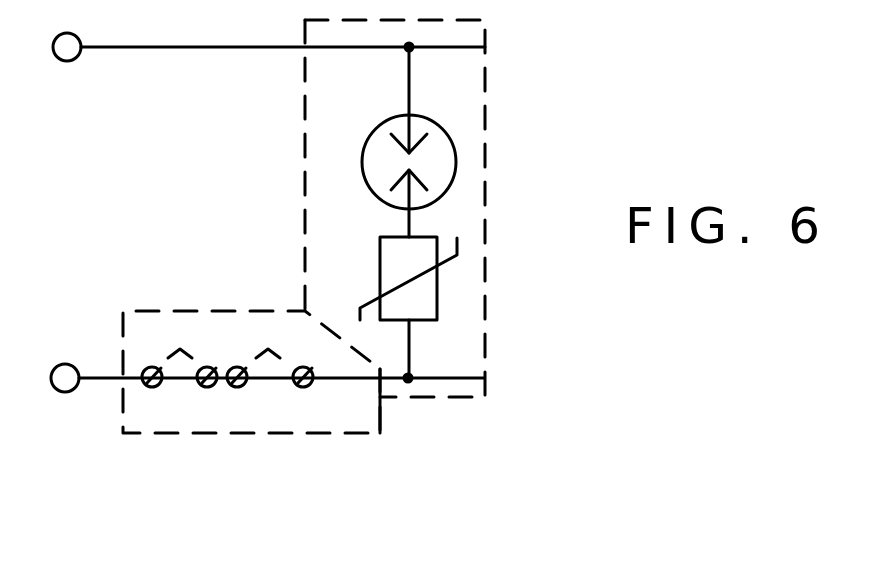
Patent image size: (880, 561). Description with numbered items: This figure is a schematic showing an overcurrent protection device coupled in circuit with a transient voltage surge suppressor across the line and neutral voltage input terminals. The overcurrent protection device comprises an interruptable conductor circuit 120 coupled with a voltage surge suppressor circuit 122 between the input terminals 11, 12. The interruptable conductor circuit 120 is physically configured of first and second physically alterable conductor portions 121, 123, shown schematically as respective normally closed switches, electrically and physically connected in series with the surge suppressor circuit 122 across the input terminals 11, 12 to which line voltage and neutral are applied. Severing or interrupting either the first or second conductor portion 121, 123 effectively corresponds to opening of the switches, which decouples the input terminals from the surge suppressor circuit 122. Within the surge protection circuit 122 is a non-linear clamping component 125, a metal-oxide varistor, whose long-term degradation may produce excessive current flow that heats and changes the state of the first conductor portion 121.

The first input terminal 11 is at (67, 86).
The second terminal 12 is at (65, 330).
The interruptable conductor circuit 120 is at (417, 427).
The first physically alterable conductor portion 121 is at (180, 452).
The voltage surge suppressor circuit 122 is at (512, 138).
The second physically alterable conductor portion 123 is at (295, 445).
The non-linear clamping component 125 is at (505, 300).